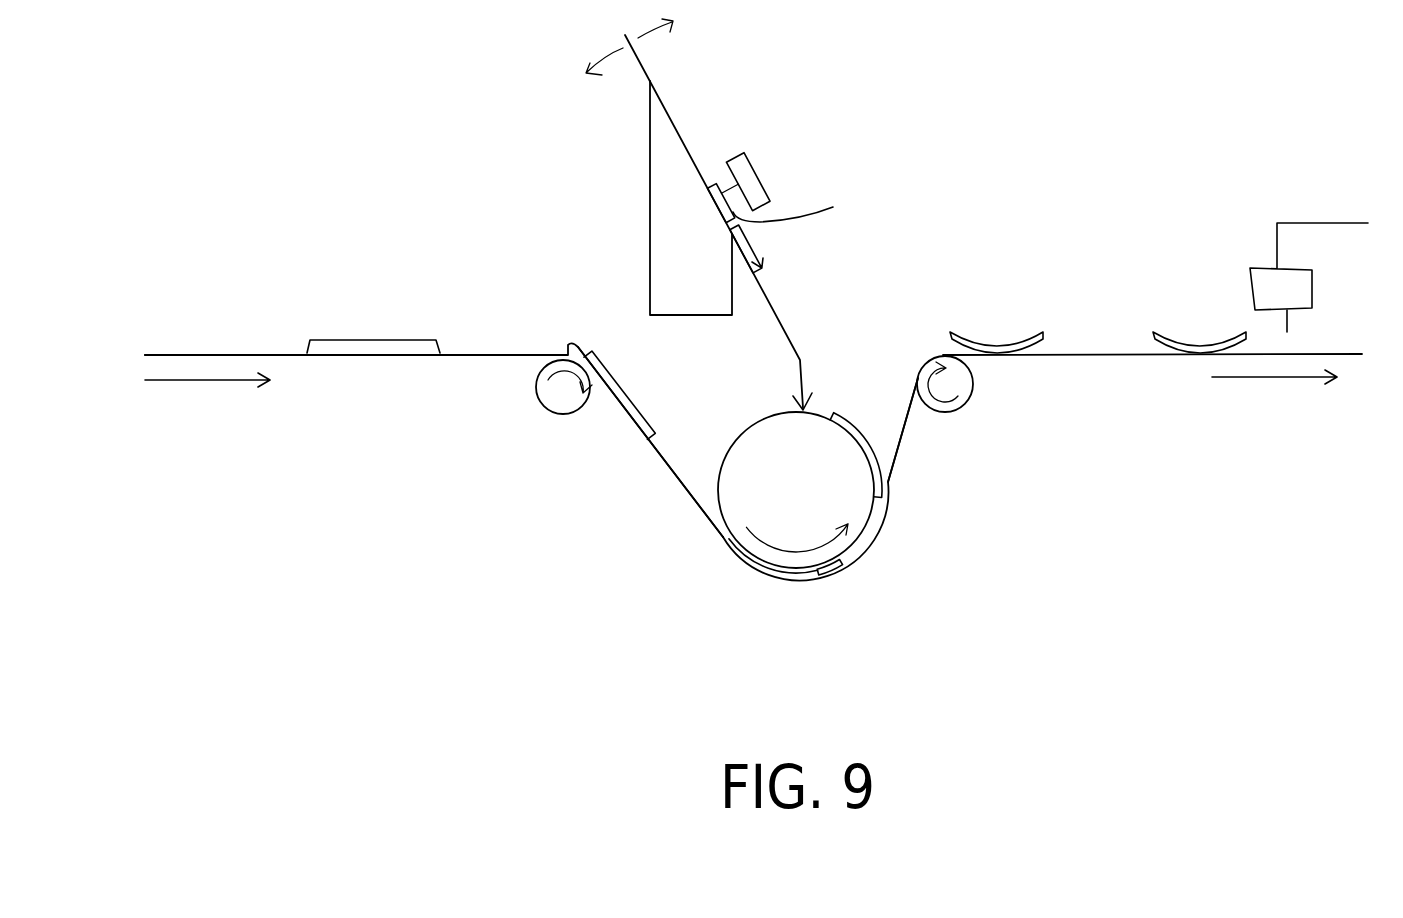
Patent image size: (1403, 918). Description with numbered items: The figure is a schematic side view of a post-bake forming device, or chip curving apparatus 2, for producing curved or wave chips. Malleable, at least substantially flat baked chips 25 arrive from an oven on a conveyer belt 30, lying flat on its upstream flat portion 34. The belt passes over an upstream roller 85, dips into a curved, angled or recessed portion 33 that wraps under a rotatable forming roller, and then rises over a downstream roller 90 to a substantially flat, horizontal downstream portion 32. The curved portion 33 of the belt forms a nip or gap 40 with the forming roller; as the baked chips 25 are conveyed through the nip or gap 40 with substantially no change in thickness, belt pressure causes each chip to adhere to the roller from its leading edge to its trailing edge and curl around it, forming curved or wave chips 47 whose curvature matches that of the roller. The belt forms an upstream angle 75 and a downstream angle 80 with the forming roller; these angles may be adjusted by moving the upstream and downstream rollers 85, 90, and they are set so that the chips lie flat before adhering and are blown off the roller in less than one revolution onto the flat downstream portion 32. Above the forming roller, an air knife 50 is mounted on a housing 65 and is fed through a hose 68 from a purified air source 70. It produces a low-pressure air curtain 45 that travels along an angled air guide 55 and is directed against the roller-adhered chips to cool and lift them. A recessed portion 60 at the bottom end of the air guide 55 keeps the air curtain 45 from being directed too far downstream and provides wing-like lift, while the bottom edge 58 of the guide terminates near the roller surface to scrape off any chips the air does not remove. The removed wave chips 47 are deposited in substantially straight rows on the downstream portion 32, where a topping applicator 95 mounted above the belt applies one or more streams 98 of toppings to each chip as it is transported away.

The chip curving apparatus 2 is at (893, 167).
The malleable baked chips 25 is at (373, 350).
The conveyer belt 30 is at (483, 358).
The downstream portion of the conveyer belt 32 is at (1075, 353).
The curved portion of the conveyer belt 33 is at (868, 547).
The upstream flat portion of the conveyer belt 34 is at (218, 353).
The nip or gap 40 is at (837, 560).
The air curtain 45 is at (748, 247).
The curved or wave chips 47 is at (850, 430).
The air knife 50 is at (713, 184).
The air guide 55 is at (772, 307).
The bottom edge of the air flow guide 58 is at (807, 402).
The recessed portion of the air guide 60 is at (800, 377).
The housing 65 is at (670, 203).
The hose 68 is at (804, 204).
The purified air source 70 is at (750, 187).
The upstream angle 75 is at (662, 468).
The downstream angle 80 is at (902, 455).
The upstream roller 85 is at (557, 395).
The downstream roller 90 is at (948, 390).
The topping applicator 95 is at (1265, 280).
The streams of toppings 98 is at (1283, 322).